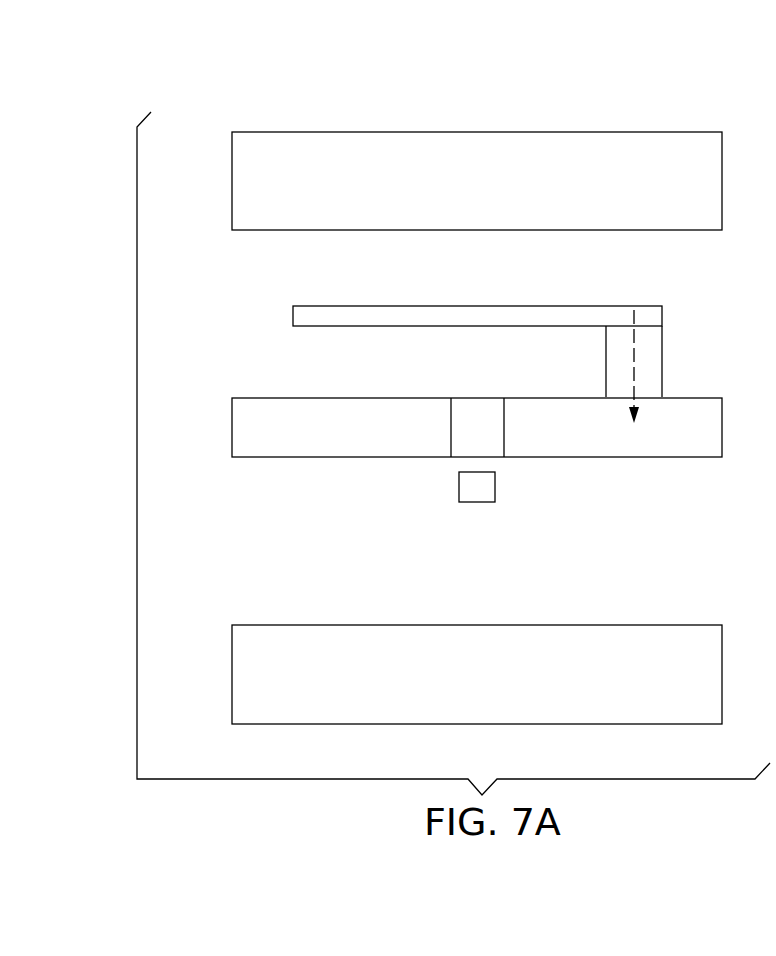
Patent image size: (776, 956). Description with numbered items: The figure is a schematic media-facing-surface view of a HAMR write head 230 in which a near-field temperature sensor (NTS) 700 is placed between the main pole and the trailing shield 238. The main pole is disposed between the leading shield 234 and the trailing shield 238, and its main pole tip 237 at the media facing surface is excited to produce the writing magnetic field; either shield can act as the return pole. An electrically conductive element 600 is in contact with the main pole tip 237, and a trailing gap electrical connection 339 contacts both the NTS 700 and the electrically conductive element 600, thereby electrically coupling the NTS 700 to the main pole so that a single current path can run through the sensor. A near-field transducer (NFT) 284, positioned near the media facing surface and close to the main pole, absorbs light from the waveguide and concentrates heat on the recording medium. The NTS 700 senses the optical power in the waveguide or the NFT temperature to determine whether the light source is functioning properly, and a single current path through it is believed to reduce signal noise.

The HAMR write head 230 is at (206, 108).
The trailing shield 238 is at (503, 189).
The near-field temperature sensor (NTS) 700 is at (293, 312).
The trailing gap electrical connection 339 is at (651, 348).
The electrically conductive element 600 is at (360, 436).
The main pole tip 237 is at (504, 418).
The near-field transducer (NFT) 284 is at (485, 492).
The leading shield 234 is at (509, 676).